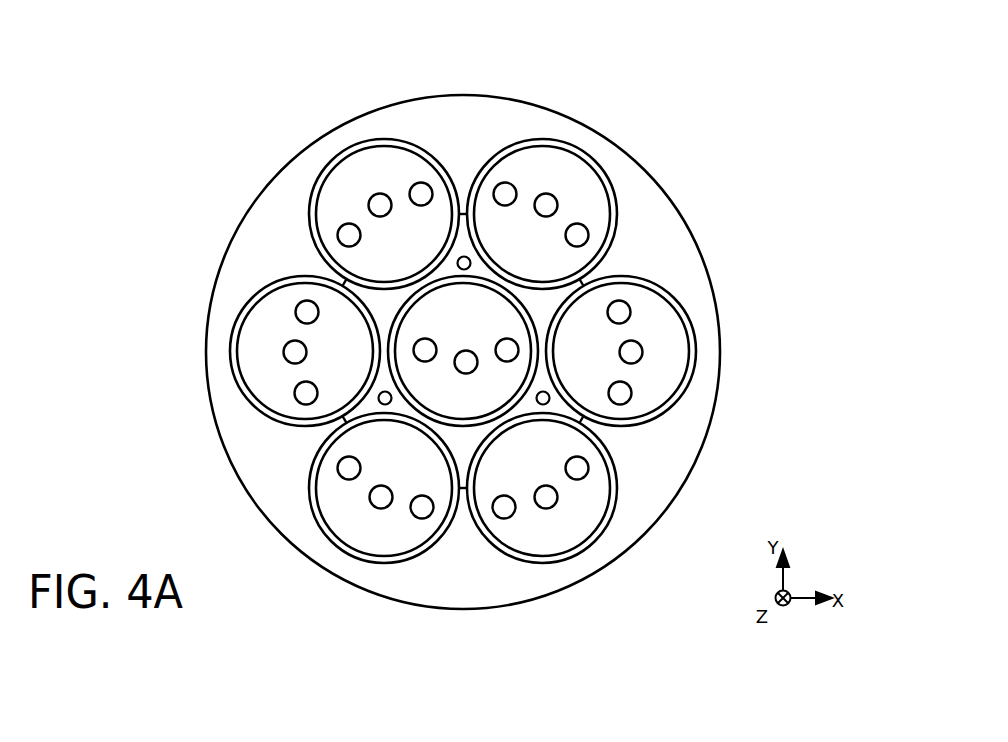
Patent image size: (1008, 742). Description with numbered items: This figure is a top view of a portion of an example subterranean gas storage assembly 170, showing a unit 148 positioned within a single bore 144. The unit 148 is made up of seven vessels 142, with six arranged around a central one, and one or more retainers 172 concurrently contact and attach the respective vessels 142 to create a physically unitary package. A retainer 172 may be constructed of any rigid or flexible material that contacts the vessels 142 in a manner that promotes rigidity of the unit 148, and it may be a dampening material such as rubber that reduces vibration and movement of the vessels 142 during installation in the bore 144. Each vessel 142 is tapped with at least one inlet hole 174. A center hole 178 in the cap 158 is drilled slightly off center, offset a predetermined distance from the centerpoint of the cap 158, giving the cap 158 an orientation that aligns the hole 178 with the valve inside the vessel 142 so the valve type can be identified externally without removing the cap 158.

The subterranean gas storage assembly 170 is at (120, 68).
The bore 144 is at (232, 250).
The unit 148 is at (659, 249).
The retainer 172 is at (464, 207).
The vessel 142 is at (663, 433).
The cap 158 is at (297, 426).
The inlet hole 174 is at (427, 336).
The center hole 178 is at (475, 343).